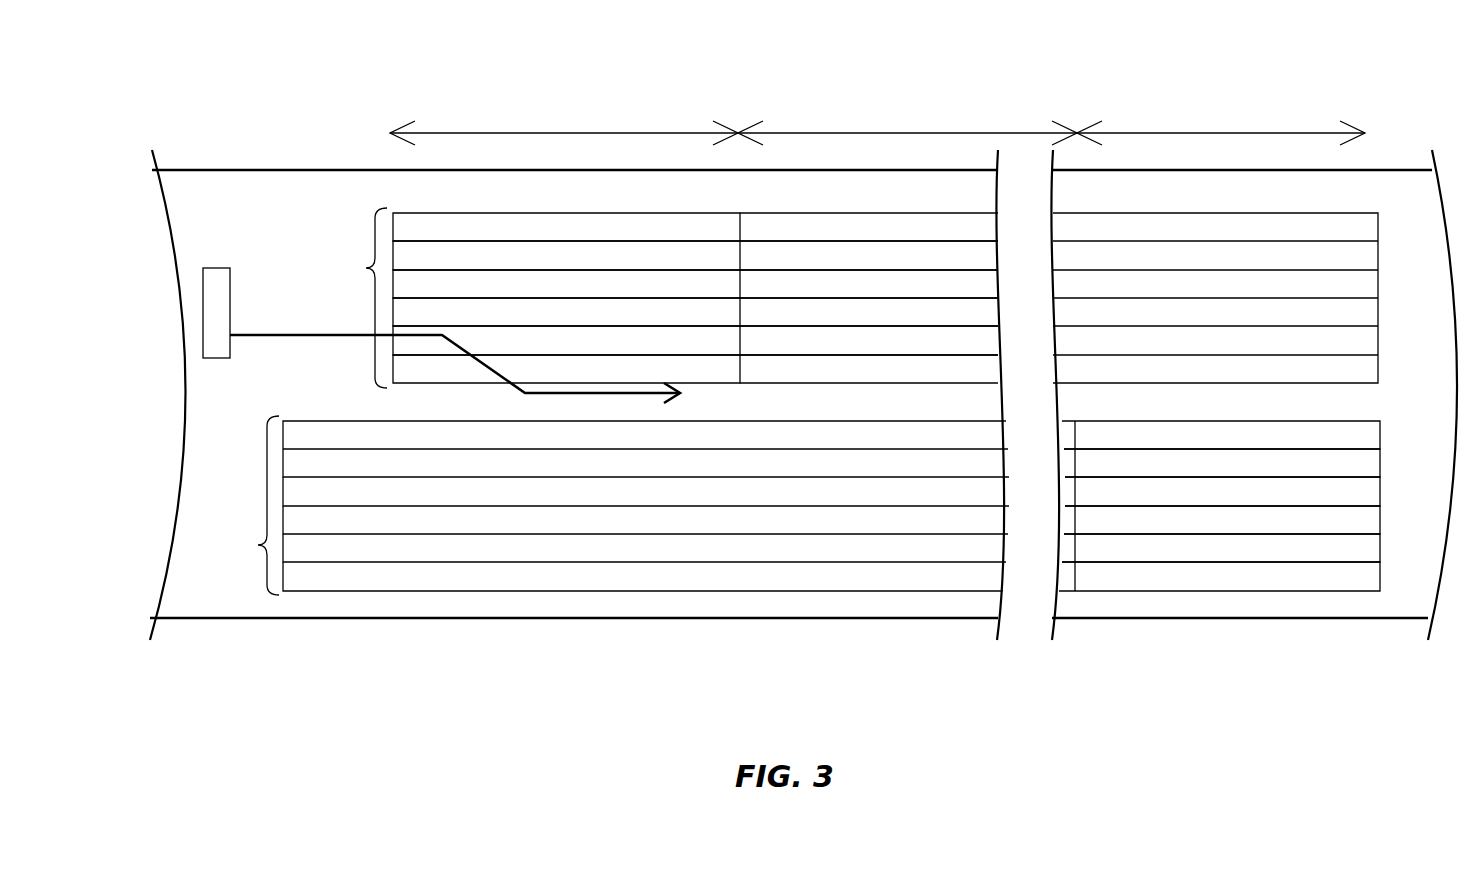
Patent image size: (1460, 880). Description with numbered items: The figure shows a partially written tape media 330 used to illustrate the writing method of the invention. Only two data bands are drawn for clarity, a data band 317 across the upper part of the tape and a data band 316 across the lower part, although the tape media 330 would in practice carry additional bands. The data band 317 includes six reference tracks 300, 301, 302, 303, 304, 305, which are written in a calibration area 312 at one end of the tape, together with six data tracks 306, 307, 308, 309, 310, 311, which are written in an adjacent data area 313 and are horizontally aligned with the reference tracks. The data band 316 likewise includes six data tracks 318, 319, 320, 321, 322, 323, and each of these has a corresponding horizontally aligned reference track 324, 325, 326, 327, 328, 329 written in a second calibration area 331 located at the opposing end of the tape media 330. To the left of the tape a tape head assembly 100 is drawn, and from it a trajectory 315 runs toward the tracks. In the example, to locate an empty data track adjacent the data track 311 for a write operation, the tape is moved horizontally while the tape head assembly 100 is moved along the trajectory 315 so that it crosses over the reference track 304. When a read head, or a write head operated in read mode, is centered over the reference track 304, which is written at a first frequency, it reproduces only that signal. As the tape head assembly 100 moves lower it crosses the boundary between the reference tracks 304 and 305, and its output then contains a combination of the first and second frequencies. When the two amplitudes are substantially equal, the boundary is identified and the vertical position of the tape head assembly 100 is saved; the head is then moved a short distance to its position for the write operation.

The tape head assembly 100 is at (223, 275).
The reference track 300 is at (545, 236).
The reference track 301 is at (581, 264).
The reference track 302 is at (617, 293).
The reference track 303 is at (653, 321).
The reference track 304 is at (689, 349).
The reference track 305 is at (725, 378).
The data track 306 is at (824, 236).
The data track 307 is at (860, 264).
The data track 308 is at (896, 293).
The data track 309 is at (932, 321).
The data track 310 is at (968, 349).
The data track 311 is at (1004, 378).
The calibration area 312 is at (670, 111).
The data area 313 is at (930, 100).
The trajectory 315 is at (303, 337).
The data band 316 is at (248, 505).
The data band 317 is at (356, 298).
The data track 318 is at (339, 444).
The data track 319 is at (375, 472).
The data track 320 is at (411, 501).
The data track 321 is at (447, 529).
The data track 322 is at (483, 557).
The data track 323 is at (519, 586).
The reference track 324 is at (1167, 444).
The reference track 325 is at (1203, 472).
The reference track 326 is at (1239, 501).
The reference track 327 is at (1275, 529).
The reference track 328 is at (1311, 557).
The reference track 329 is at (1347, 586).
The tape media 330 is at (741, 618).
The calibration area 331 is at (1317, 118).